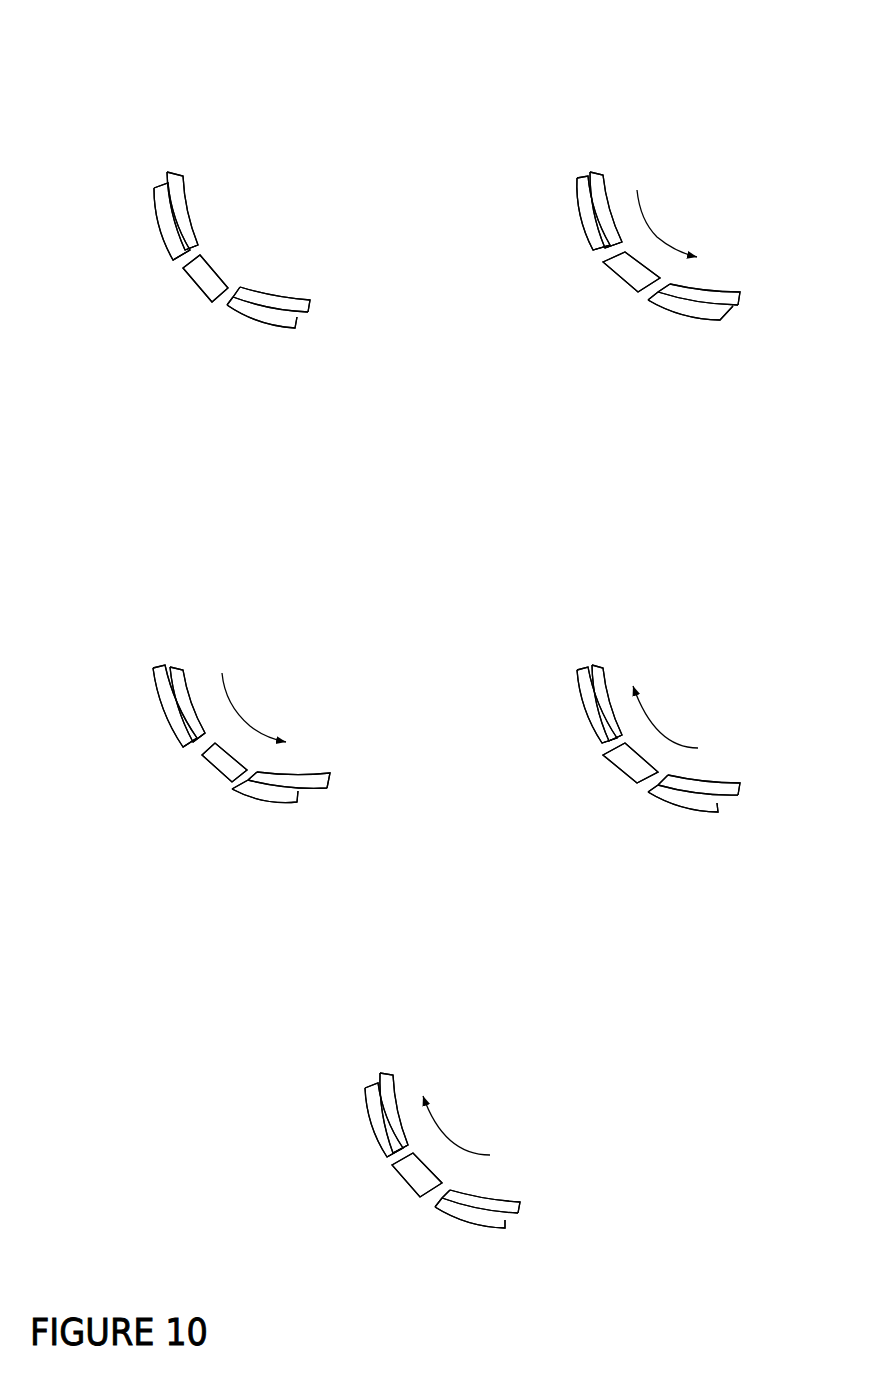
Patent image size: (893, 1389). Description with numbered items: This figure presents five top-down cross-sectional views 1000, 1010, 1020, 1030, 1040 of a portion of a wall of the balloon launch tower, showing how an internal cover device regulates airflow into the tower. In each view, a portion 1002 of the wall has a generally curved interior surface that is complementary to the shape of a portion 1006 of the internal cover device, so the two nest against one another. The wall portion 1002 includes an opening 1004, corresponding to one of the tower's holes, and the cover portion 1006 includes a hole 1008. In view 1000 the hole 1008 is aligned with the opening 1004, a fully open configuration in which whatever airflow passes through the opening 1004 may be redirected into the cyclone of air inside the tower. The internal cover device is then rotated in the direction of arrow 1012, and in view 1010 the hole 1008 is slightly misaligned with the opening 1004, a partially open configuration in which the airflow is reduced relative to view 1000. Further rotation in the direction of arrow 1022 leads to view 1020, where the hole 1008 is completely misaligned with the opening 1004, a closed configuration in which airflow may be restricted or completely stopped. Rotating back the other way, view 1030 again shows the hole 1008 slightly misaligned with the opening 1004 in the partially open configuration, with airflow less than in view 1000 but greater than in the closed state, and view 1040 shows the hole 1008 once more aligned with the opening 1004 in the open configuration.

The top-down cross-sectional view 1000 is at (300, 101).
The portion of wall 1002 is at (153, 208).
The opening 1004 is at (177, 265).
The portion of internal cover device 1006 is at (184, 203).
The hole 1008 is at (176, 251).
The top-down cross-sectional view 1010 is at (722, 101).
The arrow 1012 is at (653, 237).
The top-down cross-sectional view 1020 is at (300, 593).
The arrow 1022 is at (252, 726).
The top-down cross-sectional view 1030 is at (722, 593).
The top-down cross-sectional view 1040 is at (512, 1001).